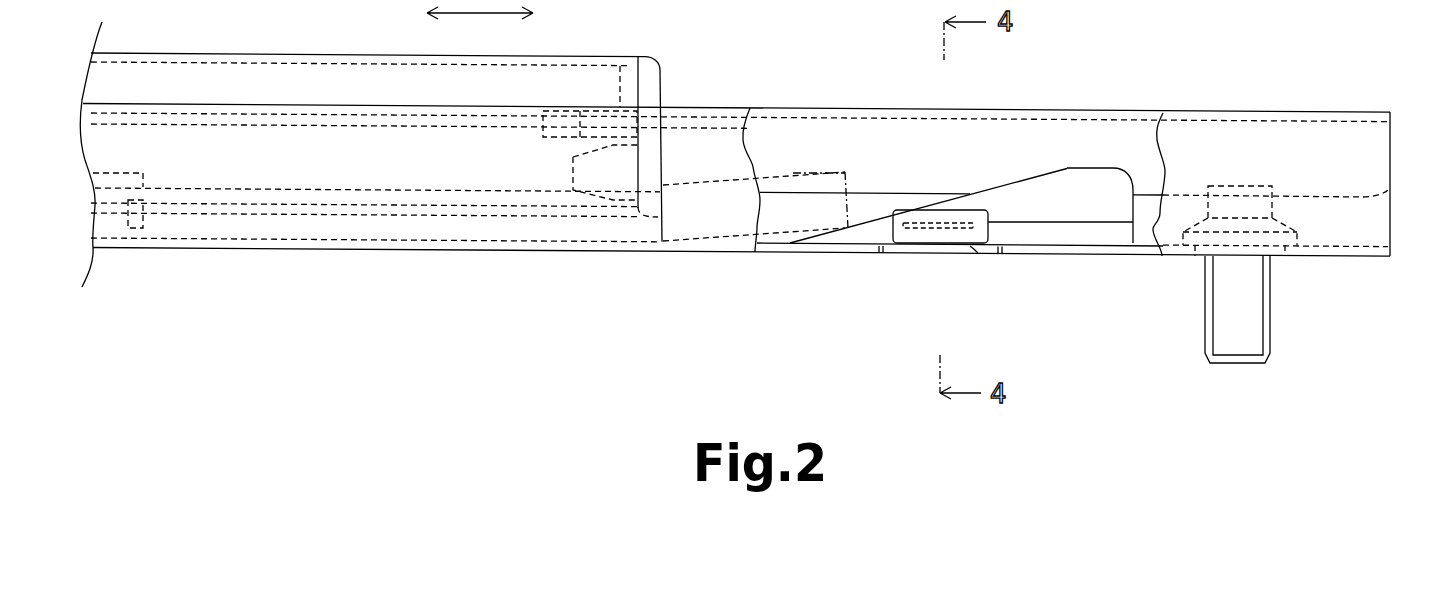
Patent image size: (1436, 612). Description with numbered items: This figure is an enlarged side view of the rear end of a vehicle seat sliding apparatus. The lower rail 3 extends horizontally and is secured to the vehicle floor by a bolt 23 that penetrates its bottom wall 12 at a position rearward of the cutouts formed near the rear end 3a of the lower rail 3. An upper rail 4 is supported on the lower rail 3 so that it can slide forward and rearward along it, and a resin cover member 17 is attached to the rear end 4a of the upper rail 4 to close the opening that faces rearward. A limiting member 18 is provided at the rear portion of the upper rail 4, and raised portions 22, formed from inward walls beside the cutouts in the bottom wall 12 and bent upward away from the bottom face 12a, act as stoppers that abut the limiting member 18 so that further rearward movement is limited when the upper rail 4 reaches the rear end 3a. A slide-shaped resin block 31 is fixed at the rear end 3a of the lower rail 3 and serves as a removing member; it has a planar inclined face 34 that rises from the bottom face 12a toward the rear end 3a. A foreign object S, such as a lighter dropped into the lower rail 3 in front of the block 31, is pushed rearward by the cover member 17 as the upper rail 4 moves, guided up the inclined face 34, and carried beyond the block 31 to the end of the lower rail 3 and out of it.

The lower rail 3 is at (1335, 112).
The rear end of the lower rail 3a is at (1387, 142).
The upper rail 4 is at (590, 57).
The rear end of the upper rail 4a is at (628, 70).
The bottom wall 12 is at (800, 256).
The bottom face 12a is at (867, 243).
The cover member 17 is at (662, 68).
The limiting member 18 is at (147, 193).
The raised portion 22 is at (947, 210).
The bolt 23 is at (1275, 318).
The block 31 is at (1082, 170).
The inclined face 34 is at (1012, 182).
The foreign object S is at (793, 172).